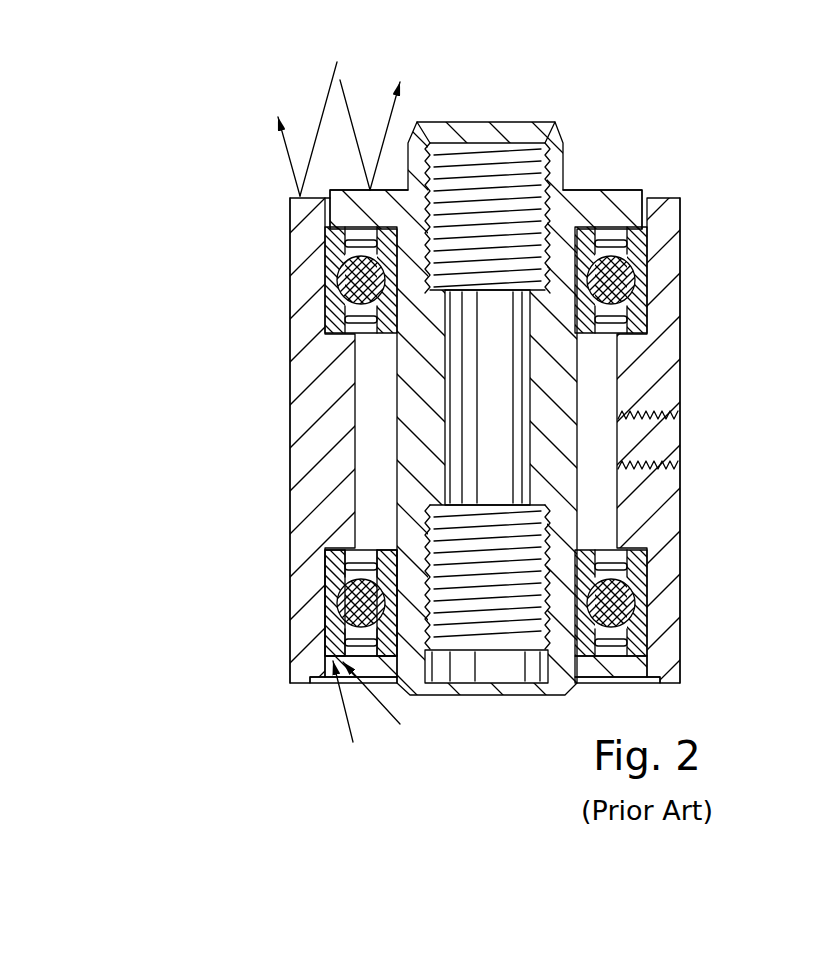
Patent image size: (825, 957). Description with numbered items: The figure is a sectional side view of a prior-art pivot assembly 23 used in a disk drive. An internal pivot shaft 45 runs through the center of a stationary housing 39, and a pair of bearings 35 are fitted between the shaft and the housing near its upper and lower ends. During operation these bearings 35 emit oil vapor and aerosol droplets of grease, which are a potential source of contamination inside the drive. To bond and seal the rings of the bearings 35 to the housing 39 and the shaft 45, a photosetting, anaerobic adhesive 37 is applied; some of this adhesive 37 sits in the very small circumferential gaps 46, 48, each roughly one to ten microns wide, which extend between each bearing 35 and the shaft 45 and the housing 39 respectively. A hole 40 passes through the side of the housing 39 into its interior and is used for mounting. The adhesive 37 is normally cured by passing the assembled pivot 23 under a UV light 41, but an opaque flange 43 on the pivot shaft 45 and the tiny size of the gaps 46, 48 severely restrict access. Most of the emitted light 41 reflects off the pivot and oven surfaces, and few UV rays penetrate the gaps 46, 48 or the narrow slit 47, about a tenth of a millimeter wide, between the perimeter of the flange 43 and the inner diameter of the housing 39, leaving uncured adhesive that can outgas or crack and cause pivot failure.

The pivot assembly 23 is at (243, 205).
The bearings 35 is at (620, 276).
The photosetting anaerobic adhesive 37 is at (327, 222).
The stationary housing 39 is at (299, 452).
The hole 40 is at (655, 418).
The UV light 41 is at (345, 101).
The flange 43 is at (619, 197).
The pivot shaft 45 is at (566, 143).
The circumferential gap 46 is at (360, 576).
The slit 47 is at (327, 195).
The circumferential gap 48 is at (325, 606).